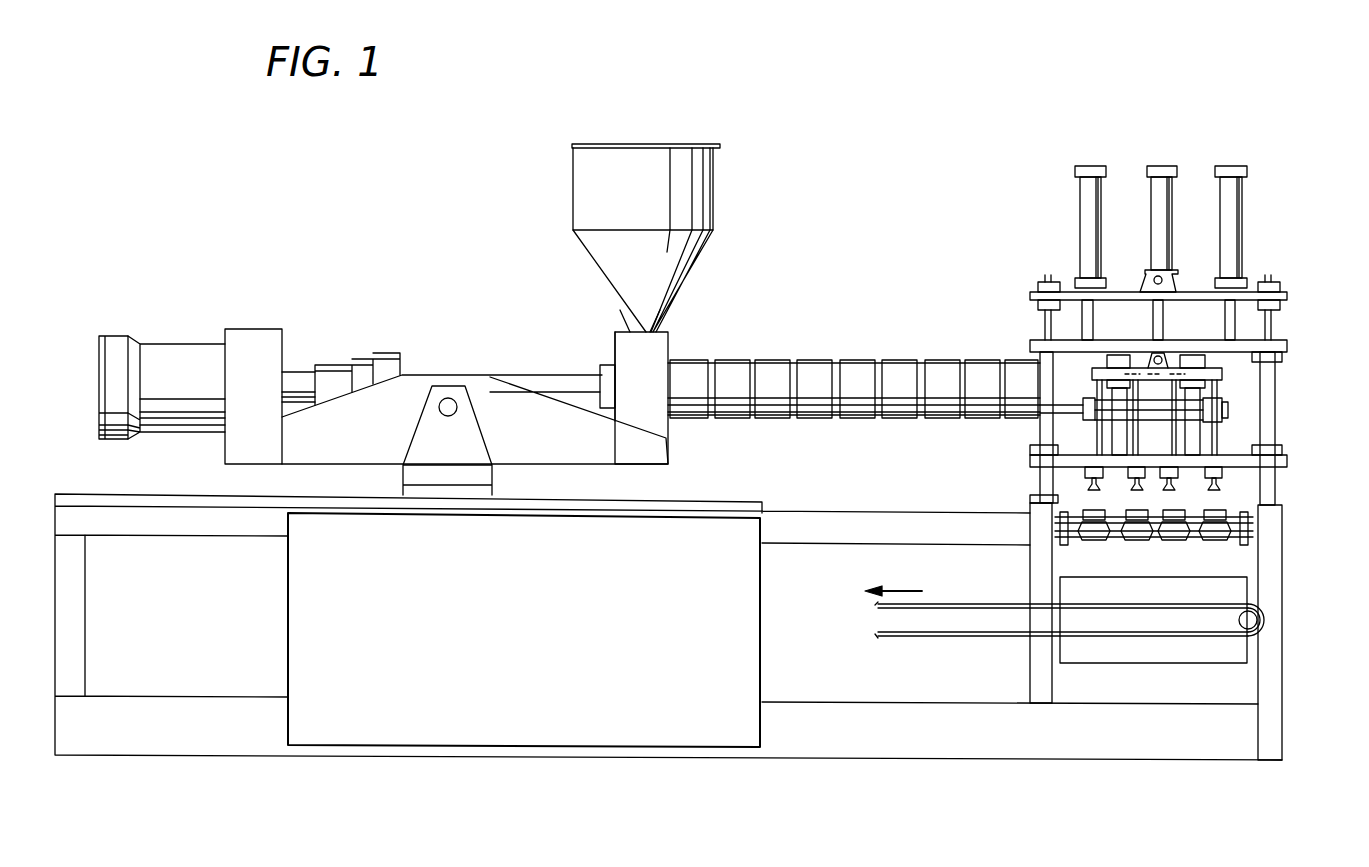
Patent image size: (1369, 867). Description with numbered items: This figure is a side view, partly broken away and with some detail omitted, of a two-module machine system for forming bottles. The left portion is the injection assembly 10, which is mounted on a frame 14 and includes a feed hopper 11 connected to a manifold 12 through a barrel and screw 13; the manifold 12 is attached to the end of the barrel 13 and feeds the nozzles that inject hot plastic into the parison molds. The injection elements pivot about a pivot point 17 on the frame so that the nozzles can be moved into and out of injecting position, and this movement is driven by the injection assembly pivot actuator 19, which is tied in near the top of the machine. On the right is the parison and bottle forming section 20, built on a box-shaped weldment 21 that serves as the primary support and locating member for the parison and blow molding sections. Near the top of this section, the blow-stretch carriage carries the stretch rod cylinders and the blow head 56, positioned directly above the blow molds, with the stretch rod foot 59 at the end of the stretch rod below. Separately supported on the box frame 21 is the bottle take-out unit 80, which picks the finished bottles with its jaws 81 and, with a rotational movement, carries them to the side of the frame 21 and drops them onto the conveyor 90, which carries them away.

The injection assembly 10 is at (422, 219).
The feed hopper 11 is at (697, 194).
The manifold 12 is at (1228, 413).
The barrel and screw 13 is at (860, 360).
The frame 14 is at (556, 645).
The pivot point 17 is at (452, 400).
The injection assembly pivot actuator 19 is at (1165, 221).
The parison and bottle forming section 20 is at (1328, 370).
The box-shaped weldment 21 is at (1272, 576).
The blow head 56 is at (1227, 473).
The stretch rod foot 59 is at (1222, 486).
The bottle take-out unit 80 is at (1226, 666).
The jaws 81 is at (1212, 545).
The conveyor 90 is at (990, 606).